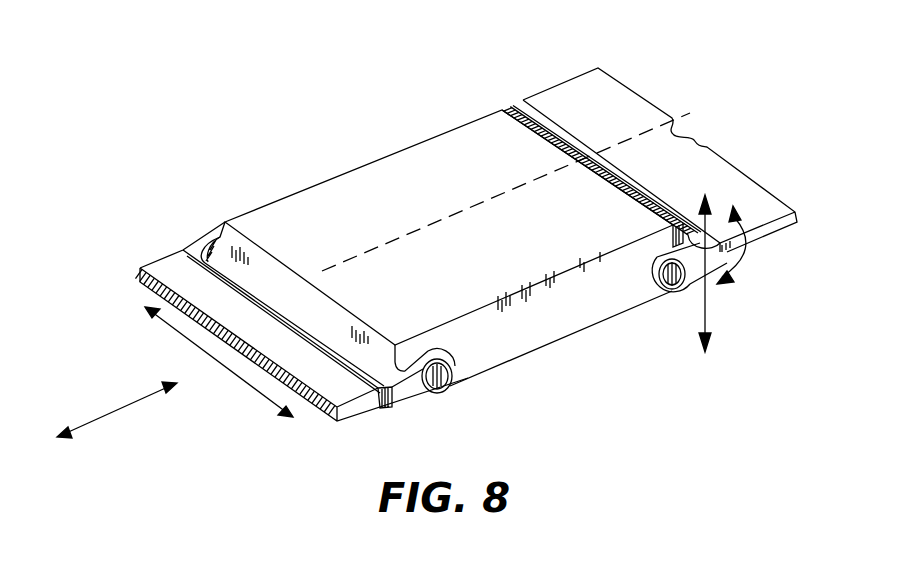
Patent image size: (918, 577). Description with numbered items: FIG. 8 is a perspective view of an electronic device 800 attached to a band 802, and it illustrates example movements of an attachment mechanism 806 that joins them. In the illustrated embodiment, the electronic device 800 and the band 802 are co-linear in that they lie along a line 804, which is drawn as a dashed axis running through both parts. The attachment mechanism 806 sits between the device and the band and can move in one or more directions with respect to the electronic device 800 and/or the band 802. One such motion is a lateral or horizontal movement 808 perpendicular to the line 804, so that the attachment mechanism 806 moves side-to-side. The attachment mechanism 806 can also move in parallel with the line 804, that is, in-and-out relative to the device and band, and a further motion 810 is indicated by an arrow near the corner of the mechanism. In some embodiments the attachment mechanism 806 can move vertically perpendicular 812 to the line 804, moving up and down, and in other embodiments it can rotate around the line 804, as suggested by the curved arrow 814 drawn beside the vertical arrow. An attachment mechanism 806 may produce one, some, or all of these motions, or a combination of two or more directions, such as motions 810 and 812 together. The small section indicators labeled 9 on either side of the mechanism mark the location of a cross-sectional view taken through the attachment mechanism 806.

The electronic device 800 is at (455, 120).
The band 802 is at (596, 70).
The line 804 is at (458, 210).
The attachment mechanism 806 is at (250, 206).
The lateral horizontal perpendicular movement 808 is at (183, 335).
The motion 810 is at (129, 396).
The vertical perpendicular movement 812 is at (707, 313).
The rotation arrow 814 is at (753, 255).
The section line 9- 9 is at (216, 219).